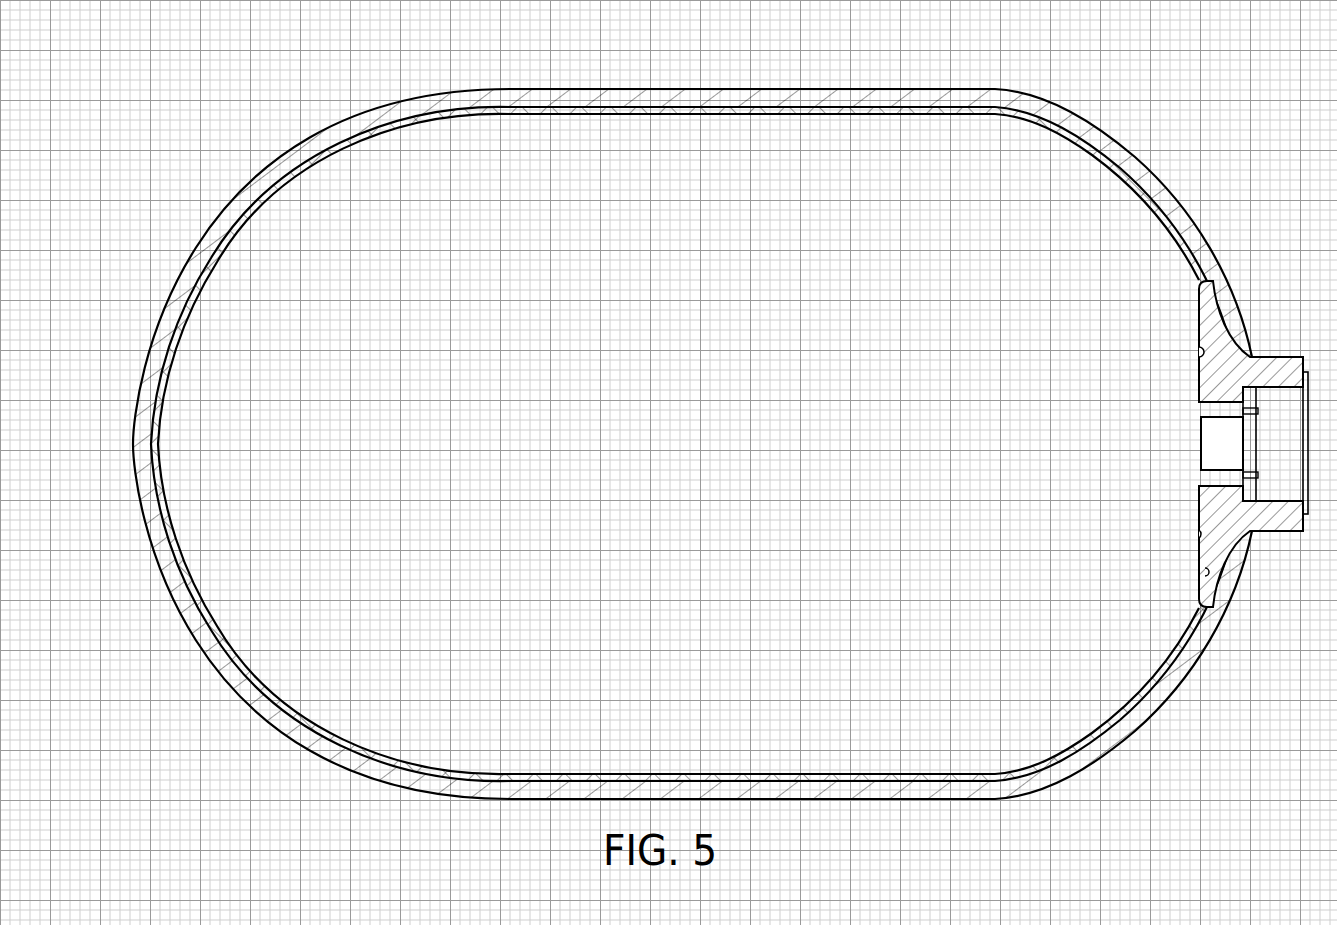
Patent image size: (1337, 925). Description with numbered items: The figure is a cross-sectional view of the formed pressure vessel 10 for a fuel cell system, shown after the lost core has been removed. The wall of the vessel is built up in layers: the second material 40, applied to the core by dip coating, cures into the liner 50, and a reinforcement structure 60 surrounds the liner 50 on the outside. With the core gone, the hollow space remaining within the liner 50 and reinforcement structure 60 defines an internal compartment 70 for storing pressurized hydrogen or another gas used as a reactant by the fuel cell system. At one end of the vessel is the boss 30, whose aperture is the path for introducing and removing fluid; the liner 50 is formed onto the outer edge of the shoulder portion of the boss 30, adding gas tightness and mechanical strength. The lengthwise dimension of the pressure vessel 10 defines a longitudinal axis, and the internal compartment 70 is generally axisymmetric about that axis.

The pressure vessel 10 is at (218, 112).
The boss 30 is at (1283, 531).
The second material 40 is at (1186, 636).
The liner 50 is at (1036, 122).
The reinforcement structure 60 is at (1113, 157).
The internal compartment 70 is at (723, 464).